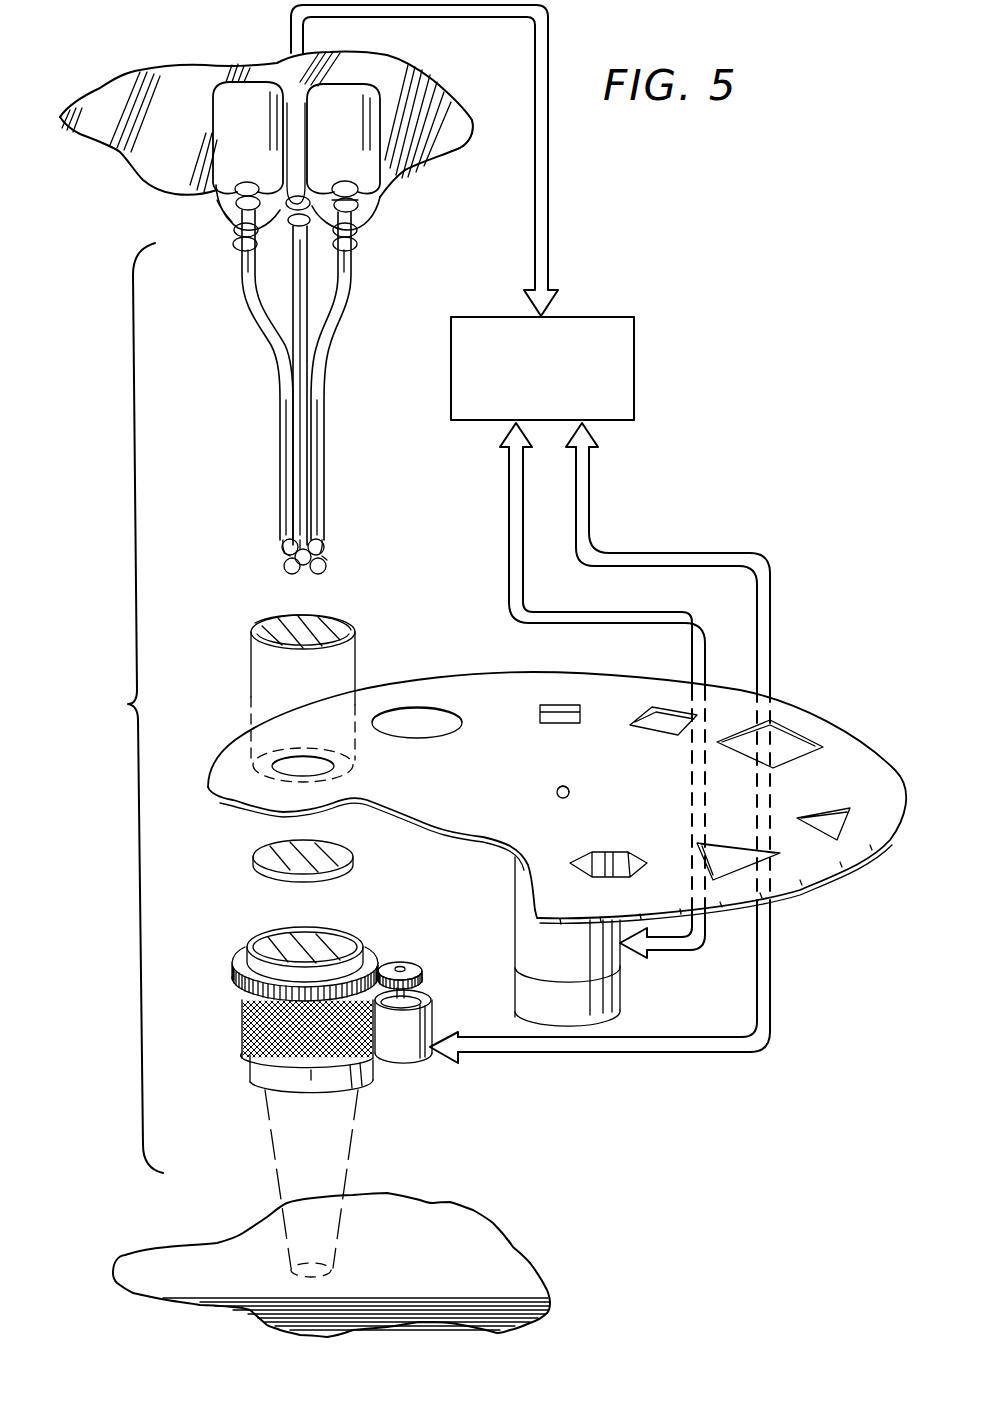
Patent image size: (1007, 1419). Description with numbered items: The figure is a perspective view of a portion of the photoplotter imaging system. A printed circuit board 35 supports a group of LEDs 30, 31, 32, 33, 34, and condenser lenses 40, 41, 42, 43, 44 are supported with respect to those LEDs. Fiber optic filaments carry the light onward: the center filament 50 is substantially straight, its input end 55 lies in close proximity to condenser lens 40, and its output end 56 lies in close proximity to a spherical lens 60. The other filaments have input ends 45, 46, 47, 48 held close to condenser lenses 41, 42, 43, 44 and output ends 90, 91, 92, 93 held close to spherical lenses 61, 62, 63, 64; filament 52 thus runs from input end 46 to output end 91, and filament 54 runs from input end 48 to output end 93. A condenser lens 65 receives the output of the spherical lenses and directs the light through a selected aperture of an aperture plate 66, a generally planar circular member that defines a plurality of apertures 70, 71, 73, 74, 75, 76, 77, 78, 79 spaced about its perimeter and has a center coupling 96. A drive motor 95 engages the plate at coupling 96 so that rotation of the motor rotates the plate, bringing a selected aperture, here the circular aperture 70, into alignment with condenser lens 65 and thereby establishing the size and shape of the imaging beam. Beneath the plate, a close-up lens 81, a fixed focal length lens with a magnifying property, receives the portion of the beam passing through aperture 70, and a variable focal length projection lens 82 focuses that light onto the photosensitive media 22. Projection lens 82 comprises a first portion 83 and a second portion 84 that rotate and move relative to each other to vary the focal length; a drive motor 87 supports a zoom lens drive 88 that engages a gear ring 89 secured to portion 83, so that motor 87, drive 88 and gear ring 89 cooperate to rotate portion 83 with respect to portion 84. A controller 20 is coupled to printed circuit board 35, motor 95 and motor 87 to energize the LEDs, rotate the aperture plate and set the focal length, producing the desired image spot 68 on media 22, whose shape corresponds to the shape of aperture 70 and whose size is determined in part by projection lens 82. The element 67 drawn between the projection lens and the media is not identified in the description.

The controller 20 is at (590, 317).
The photosensitive media 22 is at (228, 1258).
The LED 30 is at (297, 120).
The LED 31 is at (348, 103).
The LED 32 is at (242, 90).
The LED 33 is at (217, 187).
The LED 34 is at (380, 198).
The printed circuit board 35 is at (440, 143).
The condenser lens 40 is at (288, 216).
The condenser lens 41 is at (378, 209).
The condenser lens 42 is at (233, 198).
The condenser lens 43 is at (235, 236).
The condenser lens 44 is at (362, 238).
The input end 45 is at (362, 202).
The input end 46 is at (232, 217).
The input end 47 is at (238, 250).
The input end 48 is at (358, 250).
The fiber optic filament 50 is at (298, 295).
The fiber optic filament 52 is at (260, 323).
The fiber optic filament 54 is at (353, 283).
The input end 55 is at (292, 255).
The output end 56 is at (303, 540).
The spherical lens 60 is at (306, 567).
The spherical lens 61 is at (325, 551).
The spherical lens 62 is at (283, 546).
The spherical lens 63 is at (287, 570).
The spherical lens 64 is at (321, 570).
The condenser lens 65 is at (352, 633).
The aperture plate 66 is at (617, 697).
The light cone 67 is at (338, 1160).
The image spot 68 is at (320, 1267).
The aperture 70 is at (226, 757).
The aperture 71 is at (250, 665).
The aperture 73 is at (437, 715).
The aperture 74 is at (560, 705).
The aperture 75 is at (663, 708).
The aperture 76 is at (795, 737).
The aperture 77 is at (832, 813).
The aperture 78 is at (733, 847).
The aperture 79 is at (618, 852).
The close-up lens 81 is at (253, 867).
The projection lens 82 is at (242, 1008).
The first portion 83 is at (248, 953).
The second portion 84 is at (250, 1073).
The drive motor 87 is at (403, 1060).
The zoom lens drive 88 is at (402, 965).
The gear ring 89 is at (238, 978).
The output end 90 is at (318, 540).
The output end 91 is at (288, 538).
The output end 92 is at (284, 553).
The output end 93 is at (326, 560).
The drive motor 95 is at (515, 985).
The center coupling 96 is at (572, 787).